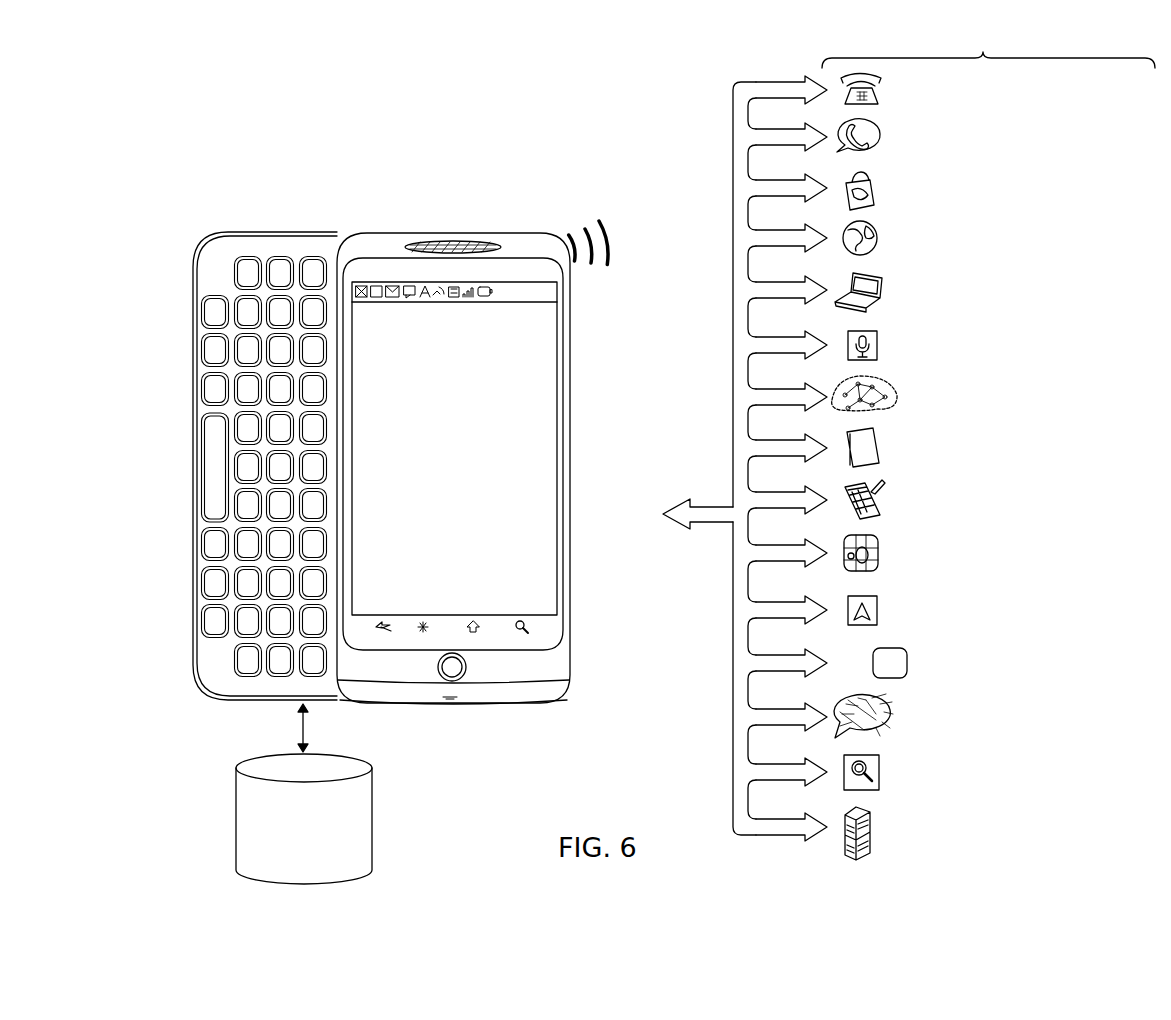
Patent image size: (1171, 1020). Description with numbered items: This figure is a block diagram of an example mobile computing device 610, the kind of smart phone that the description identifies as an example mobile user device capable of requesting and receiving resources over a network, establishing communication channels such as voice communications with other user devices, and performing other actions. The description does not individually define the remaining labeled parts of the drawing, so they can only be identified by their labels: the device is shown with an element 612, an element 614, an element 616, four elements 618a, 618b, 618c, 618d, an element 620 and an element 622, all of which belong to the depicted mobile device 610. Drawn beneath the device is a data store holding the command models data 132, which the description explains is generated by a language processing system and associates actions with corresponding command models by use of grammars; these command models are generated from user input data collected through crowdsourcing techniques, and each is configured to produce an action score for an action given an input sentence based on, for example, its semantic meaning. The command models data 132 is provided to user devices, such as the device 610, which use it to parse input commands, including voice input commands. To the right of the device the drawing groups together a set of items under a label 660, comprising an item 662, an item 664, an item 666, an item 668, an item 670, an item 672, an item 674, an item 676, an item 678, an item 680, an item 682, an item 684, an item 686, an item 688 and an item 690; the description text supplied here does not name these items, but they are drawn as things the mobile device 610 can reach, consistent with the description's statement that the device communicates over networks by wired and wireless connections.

The mobile computing device 610 is at (508, 174).
The display / housing 612 is at (556, 458).
The keyboard 614 is at (305, 232).
The trackball / pointing device 616 is at (467, 667).
The back button 618a is at (384, 620).
The menu button 618b is at (424, 619).
The home button 618c is at (472, 620).
The search button 618d is at (522, 619).
The speaker 620 is at (458, 240).
The microphone 622 is at (448, 705).
The command models data 132 is at (304, 794).
The network services 660 is at (909, 445).
The PSTN 662 is at (878, 92).
The VoIP service 664 is at (878, 135).
The application store 666 is at (876, 185).
The Internet 668 is at (876, 240).
The personal computer 670 is at (884, 283).
The voice recognition service 672 is at (880, 342).
The social network 674 is at (897, 386).
The contacts service 676 is at (880, 447).
The cloud-based applications 678 is at (880, 500).
The mapping service 680 is at (880, 548).
The turn-by-turn directions service 682 is at (880, 605).
The streaming media service 684 is at (910, 660).
The micro-blogging service 686 is at (895, 712).
The search engine 688 is at (880, 768).
The server system 690 is at (880, 820).